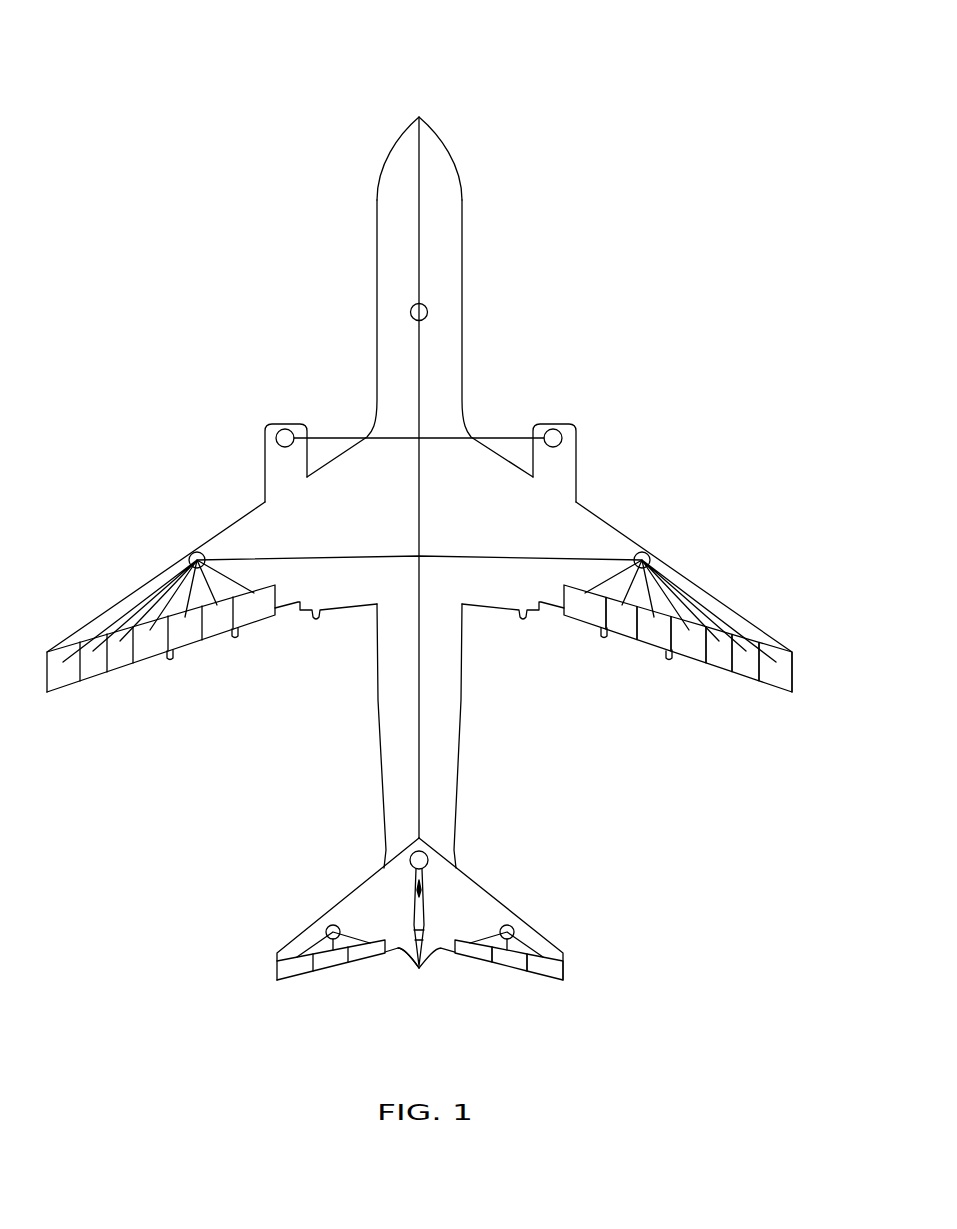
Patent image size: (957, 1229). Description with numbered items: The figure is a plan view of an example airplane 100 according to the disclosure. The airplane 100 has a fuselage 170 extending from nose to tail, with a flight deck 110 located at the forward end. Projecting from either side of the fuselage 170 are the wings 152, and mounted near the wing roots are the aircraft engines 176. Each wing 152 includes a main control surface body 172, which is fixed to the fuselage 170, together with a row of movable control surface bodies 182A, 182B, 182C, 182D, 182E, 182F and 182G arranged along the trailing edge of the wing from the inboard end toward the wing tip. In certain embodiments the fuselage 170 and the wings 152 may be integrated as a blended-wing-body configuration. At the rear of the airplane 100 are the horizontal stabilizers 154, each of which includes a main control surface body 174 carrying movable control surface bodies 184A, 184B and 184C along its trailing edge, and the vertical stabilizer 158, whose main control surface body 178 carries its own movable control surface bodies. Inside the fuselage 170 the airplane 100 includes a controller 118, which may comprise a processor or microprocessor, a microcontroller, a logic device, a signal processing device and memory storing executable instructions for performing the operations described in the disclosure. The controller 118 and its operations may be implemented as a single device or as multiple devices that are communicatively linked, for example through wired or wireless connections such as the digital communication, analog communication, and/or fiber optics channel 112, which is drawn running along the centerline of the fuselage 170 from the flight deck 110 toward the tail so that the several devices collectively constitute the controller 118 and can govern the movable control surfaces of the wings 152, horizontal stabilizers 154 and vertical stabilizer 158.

The airplane 100 is at (387, 164).
The flight deck 110 is at (424, 96).
The digital communication, analog communication, and/or fiber optics channel 112 is at (422, 508).
The controller 118 is at (428, 312).
The wings 152 is at (152, 580).
The horizontal stabilizers 154 is at (350, 895).
The vertical stabilizers 158 is at (392, 948).
The fuselage 170 is at (376, 295).
The main control surface body 172 is at (698, 592).
The main control surface body 174 is at (517, 927).
The aircraft engines 176 is at (268, 427).
The main control surface body 178 is at (397, 952).
The movable control surface body 182A is at (577, 612).
The movable control surface body 182B is at (622, 628).
The movable control surface body 182C is at (657, 637).
The movable control surface body 182D is at (692, 648).
The movable control surface body 182E is at (717, 657).
The movable control surface body 182F is at (747, 672).
The movable control surface body 182G is at (780, 675).
The movable control surface body 184A is at (472, 958).
The movable control surface body 184B is at (517, 970).
The movable control surface body 184C is at (560, 970).